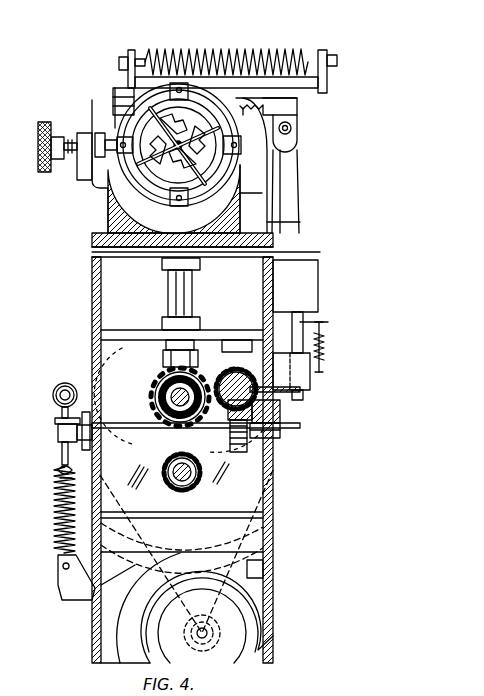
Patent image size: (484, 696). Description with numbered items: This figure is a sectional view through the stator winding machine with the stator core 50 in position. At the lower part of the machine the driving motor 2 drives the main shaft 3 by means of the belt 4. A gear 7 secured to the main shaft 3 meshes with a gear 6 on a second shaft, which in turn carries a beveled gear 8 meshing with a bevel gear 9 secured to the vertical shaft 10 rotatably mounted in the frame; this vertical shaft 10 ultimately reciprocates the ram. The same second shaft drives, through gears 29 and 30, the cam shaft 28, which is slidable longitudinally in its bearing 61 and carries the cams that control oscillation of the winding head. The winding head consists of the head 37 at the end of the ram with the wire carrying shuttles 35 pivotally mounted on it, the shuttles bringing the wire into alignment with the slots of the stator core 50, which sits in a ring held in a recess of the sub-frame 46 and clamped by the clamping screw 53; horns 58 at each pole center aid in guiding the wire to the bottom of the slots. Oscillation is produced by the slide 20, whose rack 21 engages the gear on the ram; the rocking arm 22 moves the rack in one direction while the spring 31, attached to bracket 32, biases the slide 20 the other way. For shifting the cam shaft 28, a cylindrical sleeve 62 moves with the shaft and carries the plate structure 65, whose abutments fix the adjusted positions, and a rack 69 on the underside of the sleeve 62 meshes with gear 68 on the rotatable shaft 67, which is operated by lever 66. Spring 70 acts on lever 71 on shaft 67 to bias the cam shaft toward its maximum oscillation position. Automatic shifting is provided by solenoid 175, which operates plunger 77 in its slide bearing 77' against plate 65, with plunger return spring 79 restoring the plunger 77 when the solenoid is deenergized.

The driving motor 2 is at (262, 620).
The main shaft 3 is at (183, 484).
The belt 4 is at (92, 593).
The gear 6 is at (143, 332).
The gear 7 is at (208, 490).
The beveled gear 8 is at (160, 396).
The bevel gear 9 is at (152, 390).
The vertical shaft 10 is at (186, 293).
The slide 20 is at (128, 78).
The rack 21 is at (300, 123).
The rocking arm 22 is at (290, 172).
The shaft 28 is at (238, 368).
The gear 29 is at (162, 386).
The gear 30 is at (158, 482).
The spring 31 is at (256, 52).
The bracket 32 is at (328, 79).
The wire carrying shuttle 35 is at (262, 193).
The head 37 is at (153, 194).
The sub-frame 46 is at (300, 222).
The stator core 50 is at (145, 50).
The clamping screw 53 is at (52, 125).
The horn 58 is at (200, 113).
The bearing 61 is at (282, 411).
The cylindrical sleeve 62 is at (232, 345).
The plate structure 65 is at (300, 403).
The lever 66 is at (58, 406).
The rotatable shaft 67 is at (142, 488).
The gear 68 is at (248, 454).
The rack 69 is at (238, 458).
The spring 70 is at (54, 517).
The lever 71 is at (62, 450).
The plunger 77 is at (329, 324).
The slide bearing 77' is at (318, 376).
The plunger return spring 79 is at (326, 349).
The solenoid 175 is at (300, 290).